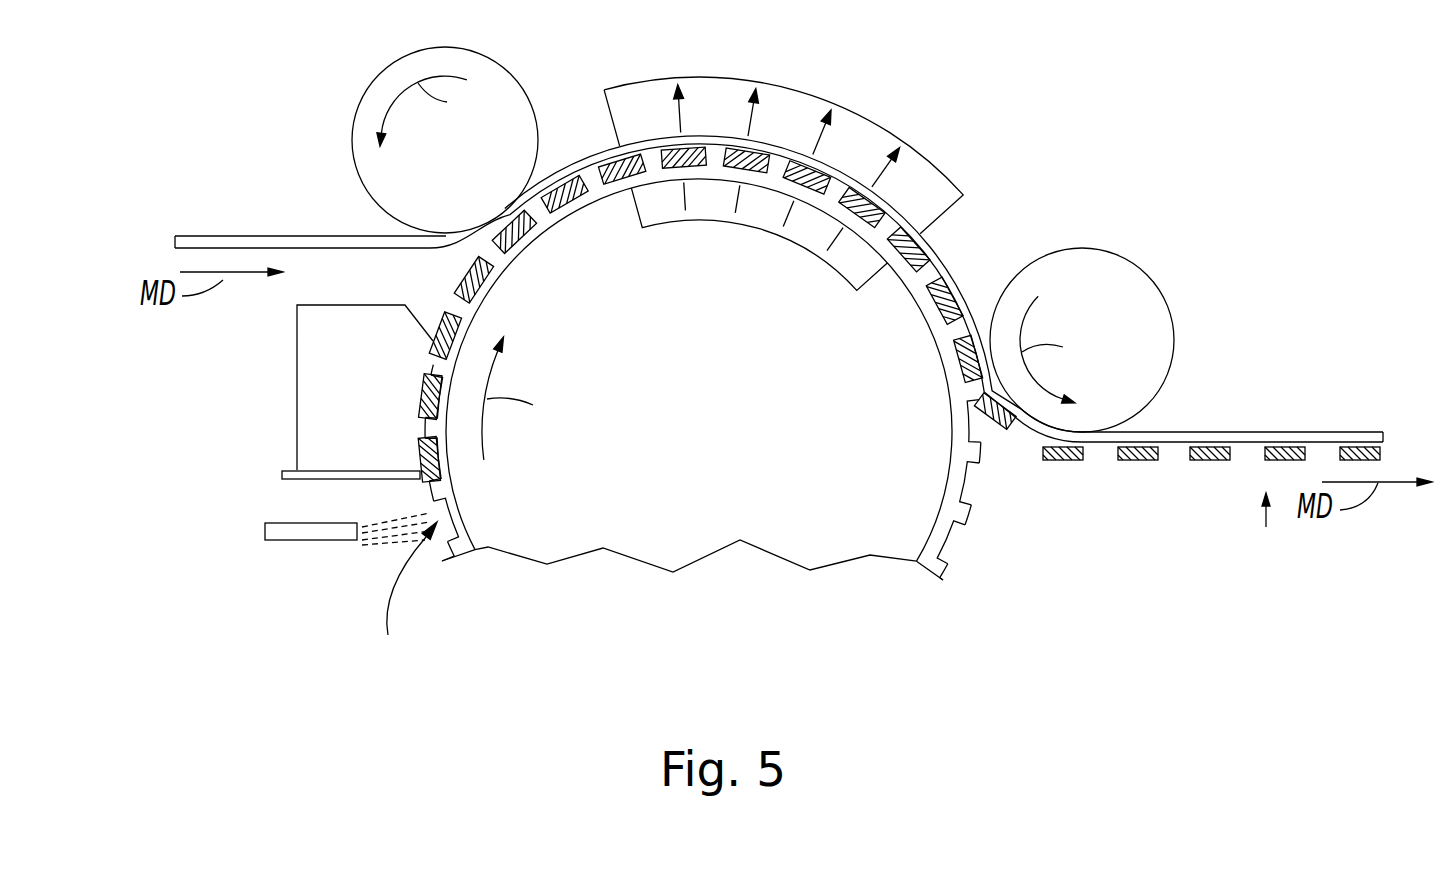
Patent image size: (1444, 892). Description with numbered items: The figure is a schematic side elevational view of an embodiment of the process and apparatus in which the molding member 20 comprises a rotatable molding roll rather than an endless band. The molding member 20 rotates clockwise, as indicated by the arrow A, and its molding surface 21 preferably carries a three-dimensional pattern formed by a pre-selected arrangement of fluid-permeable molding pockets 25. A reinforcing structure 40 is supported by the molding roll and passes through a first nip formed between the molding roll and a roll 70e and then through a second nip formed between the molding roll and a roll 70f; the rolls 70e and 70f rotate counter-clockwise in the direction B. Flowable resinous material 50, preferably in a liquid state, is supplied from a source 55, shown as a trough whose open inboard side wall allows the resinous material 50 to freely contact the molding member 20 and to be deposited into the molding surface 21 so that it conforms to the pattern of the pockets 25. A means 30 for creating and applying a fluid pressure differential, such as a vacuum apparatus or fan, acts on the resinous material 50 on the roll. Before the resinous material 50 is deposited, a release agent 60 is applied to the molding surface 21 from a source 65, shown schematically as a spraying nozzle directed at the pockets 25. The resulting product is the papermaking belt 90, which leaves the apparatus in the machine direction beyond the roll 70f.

The molding member 20 is at (968, 507).
The molding surface 21 is at (955, 542).
The molding pockets 25 is at (404, 597).
The means for creating and applying fluid pressure differential 30 is at (813, 230).
The reinforcing structure 40 is at (292, 236).
The flowable resinous material 50 is at (462, 278).
The source 55 is at (327, 352).
The release agent 60 is at (398, 543).
The source of release agent 65 is at (290, 530).
The roll 70e is at (464, 200).
The roll 70f is at (1126, 306).
The papermaking belt 90 is at (1266, 527).